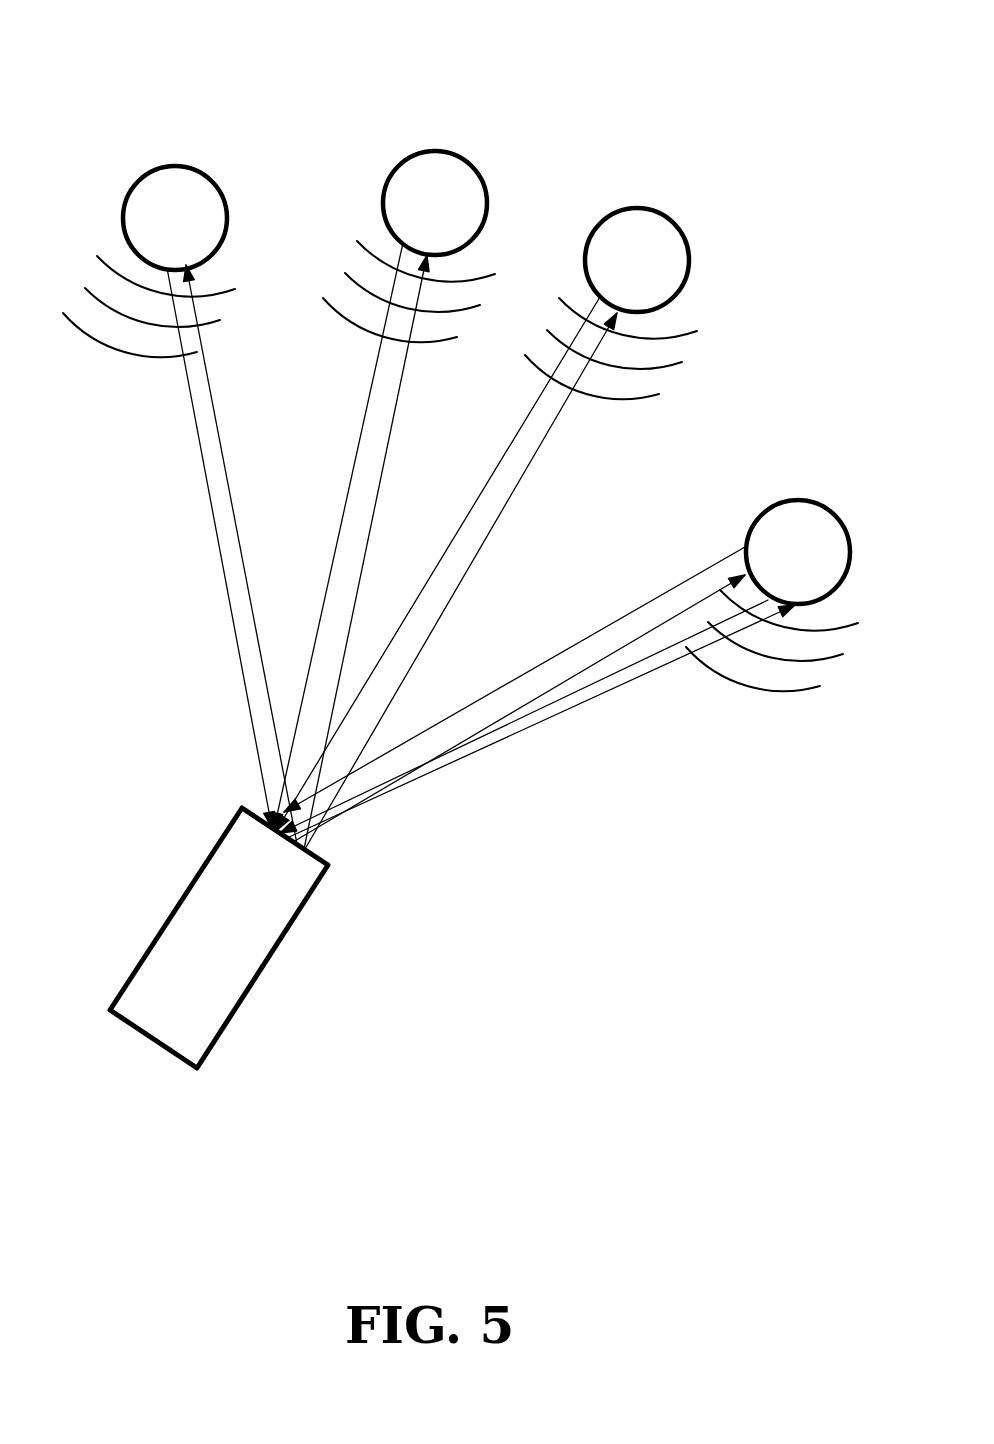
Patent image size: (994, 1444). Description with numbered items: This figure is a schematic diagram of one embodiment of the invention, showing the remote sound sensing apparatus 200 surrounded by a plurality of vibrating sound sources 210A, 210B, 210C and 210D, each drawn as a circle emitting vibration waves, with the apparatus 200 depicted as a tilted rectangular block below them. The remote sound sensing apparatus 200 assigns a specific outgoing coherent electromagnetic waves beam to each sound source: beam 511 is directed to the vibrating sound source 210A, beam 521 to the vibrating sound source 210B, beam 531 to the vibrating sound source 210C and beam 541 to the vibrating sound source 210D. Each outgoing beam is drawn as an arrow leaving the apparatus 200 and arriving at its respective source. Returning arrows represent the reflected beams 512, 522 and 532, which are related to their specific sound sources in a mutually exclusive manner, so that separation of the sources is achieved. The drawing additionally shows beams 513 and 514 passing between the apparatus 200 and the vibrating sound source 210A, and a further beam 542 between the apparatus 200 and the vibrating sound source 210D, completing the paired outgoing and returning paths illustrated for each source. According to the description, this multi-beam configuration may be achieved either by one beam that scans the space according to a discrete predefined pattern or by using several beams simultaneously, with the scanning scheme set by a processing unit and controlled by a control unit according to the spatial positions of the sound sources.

The remote sound sensing apparatus 200 is at (183, 883).
The vibrating sound source 210A is at (795, 501).
The vibrating sound source 210B is at (633, 209).
The vibrating sound source 210C is at (435, 152).
The vibrating sound source 210D is at (165, 167).
The outgoing coherent electromagnetic waves beam 511 is at (587, 705).
The reflected beam 512 is at (690, 648).
The signal from device to beacon 210A 513 is at (688, 605).
The signal from beacon 210A to device 514 is at (618, 625).
The outgoing coherent electromagnetic waves beam 521 is at (545, 430).
The reflected beam 522 is at (517, 428).
The outgoing coherent electromagnetic waves beam 531 is at (389, 440).
The reflected beam 532 is at (330, 573).
The outgoing coherent electromagnetic waves beam 541 is at (232, 468).
The signal from beacon 210D to device 542 is at (207, 480).